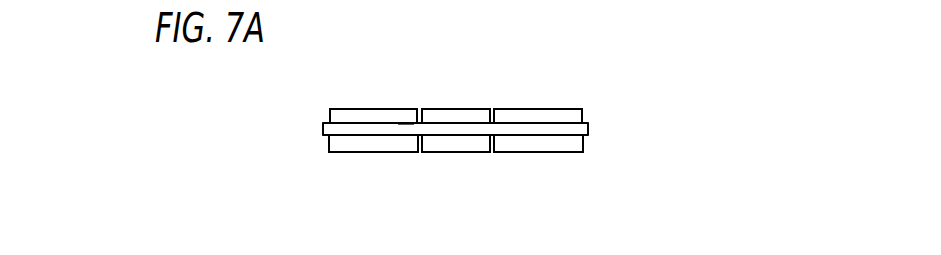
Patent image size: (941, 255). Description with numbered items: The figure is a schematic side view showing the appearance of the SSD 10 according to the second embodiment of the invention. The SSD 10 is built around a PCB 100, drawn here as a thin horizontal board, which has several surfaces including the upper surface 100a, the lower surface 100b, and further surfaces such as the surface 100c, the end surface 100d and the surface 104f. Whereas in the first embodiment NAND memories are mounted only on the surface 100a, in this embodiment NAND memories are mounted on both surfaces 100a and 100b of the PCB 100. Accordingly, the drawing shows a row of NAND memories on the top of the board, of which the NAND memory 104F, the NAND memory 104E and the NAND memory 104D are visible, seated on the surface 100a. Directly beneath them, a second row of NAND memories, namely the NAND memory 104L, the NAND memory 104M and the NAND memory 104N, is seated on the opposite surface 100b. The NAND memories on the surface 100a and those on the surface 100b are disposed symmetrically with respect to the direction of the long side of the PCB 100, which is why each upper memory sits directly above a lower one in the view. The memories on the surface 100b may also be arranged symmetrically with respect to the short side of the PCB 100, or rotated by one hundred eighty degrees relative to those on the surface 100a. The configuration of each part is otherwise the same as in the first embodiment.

The SSD 10 is at (552, 55).
The PCB 100 is at (323, 122).
The surface 100a is at (588, 121).
The surface 100b is at (586, 138).
The surface 100c is at (404, 126).
The surface 100d is at (590, 129).
The surface 104f is at (326, 128).
The NAND memory 104F is at (360, 114).
The NAND memory 104E is at (459, 114).
The NAND memory 104D is at (542, 117).
The NAND memory 104L is at (367, 147).
The NAND memory 104M is at (454, 147).
The NAND memory 104N is at (546, 147).